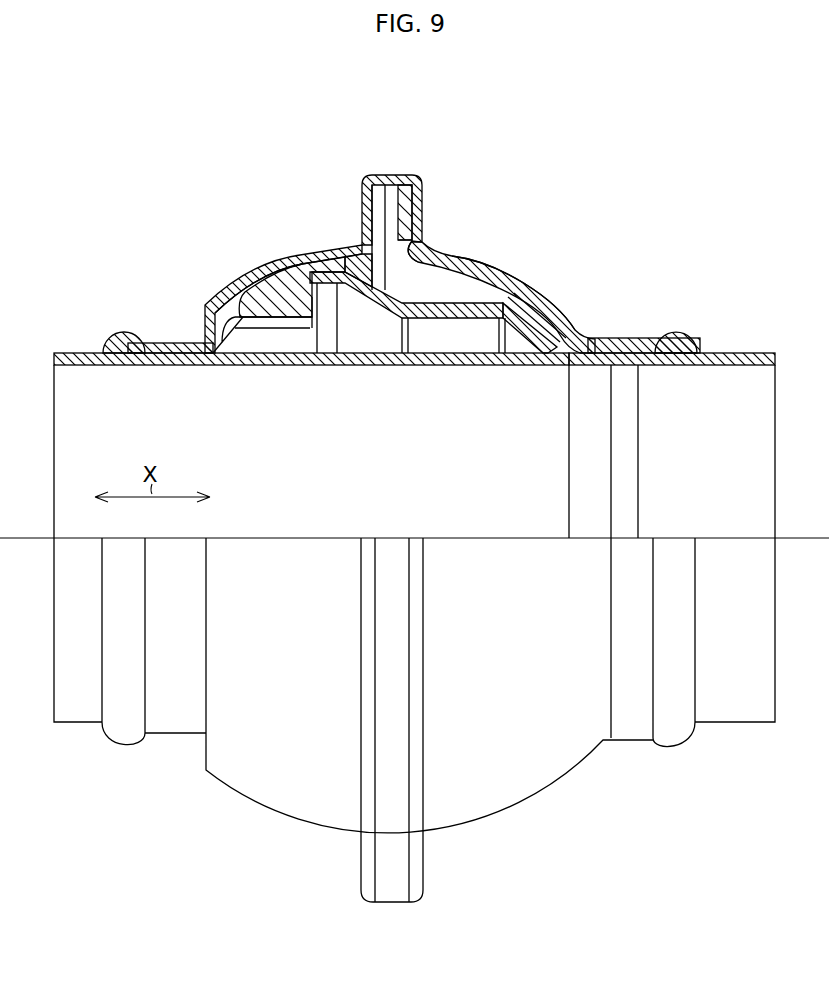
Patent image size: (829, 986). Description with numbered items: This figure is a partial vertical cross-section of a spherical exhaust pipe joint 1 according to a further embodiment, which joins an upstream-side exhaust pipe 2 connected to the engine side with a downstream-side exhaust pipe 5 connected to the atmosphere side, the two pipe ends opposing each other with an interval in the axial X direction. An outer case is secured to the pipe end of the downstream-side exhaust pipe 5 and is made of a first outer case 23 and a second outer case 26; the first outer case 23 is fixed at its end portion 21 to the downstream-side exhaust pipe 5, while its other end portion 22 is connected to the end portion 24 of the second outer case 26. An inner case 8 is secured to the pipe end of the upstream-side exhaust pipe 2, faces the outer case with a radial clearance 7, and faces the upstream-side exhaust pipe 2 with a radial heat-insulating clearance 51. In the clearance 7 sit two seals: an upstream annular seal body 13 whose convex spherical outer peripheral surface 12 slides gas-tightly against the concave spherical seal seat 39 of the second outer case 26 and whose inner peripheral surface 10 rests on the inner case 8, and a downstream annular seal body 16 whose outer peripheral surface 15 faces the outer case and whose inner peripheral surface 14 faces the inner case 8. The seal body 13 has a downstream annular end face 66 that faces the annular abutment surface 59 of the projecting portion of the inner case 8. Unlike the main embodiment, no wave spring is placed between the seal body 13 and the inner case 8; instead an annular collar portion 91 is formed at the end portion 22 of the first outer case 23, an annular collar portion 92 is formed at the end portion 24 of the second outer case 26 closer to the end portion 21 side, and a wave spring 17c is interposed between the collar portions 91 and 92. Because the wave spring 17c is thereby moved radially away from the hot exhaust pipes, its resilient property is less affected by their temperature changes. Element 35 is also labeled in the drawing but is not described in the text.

The spherical exhaust pipe joint 1 is at (364, 168).
The upstream-side exhaust pipe 2 is at (82, 358).
The downstream-side exhaust pipe 5 is at (745, 352).
The clearance 7 is at (460, 282).
The inner case 8 is at (430, 312).
The inner peripheral surface 10 is at (270, 322).
The outer peripheral surface 12 is at (258, 295).
The annular seal body 13 is at (253, 325).
The inner peripheral surface 14 is at (537, 332).
The outer peripheral surface 15 is at (553, 305).
The annular seal body 16 is at (560, 335).
The wave spring 17c is at (401, 195).
The end portion 21 is at (680, 345).
The end portion 22 is at (410, 250).
The first outer case 23 is at (506, 274).
The end portion 24 is at (357, 245).
The second outer case 26 is at (290, 270).
The flat portion 35 is at (560, 318).
The concave spherical seal seat 39 is at (228, 298).
The heat-insulating clearance 51 is at (467, 335).
The abutment surface 59 is at (310, 315).
The annular end face 66 is at (333, 322).
The annular collar portion 91 is at (371, 192).
The annular collar portion 92 is at (410, 233).